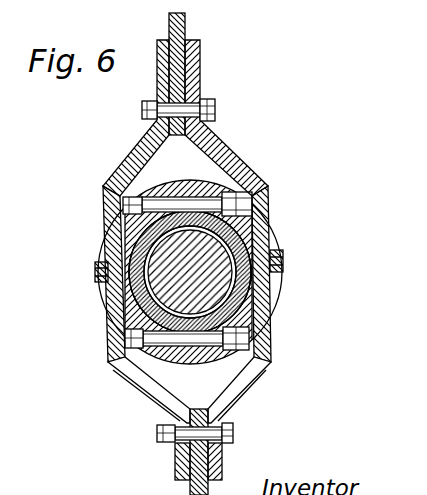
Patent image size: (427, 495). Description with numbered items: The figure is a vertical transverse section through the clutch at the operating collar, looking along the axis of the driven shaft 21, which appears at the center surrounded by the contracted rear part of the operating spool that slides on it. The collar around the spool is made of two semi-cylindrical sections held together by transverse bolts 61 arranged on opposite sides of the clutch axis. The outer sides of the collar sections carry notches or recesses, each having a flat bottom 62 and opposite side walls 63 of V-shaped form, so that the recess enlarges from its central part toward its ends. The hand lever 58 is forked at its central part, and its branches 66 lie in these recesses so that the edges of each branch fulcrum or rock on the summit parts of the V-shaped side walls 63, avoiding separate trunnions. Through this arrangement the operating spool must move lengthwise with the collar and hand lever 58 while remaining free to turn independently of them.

The hand lever 58 is at (187, 254).
The transverse bolts 61 is at (190, 207).
The flat bottom 62 is at (125, 262).
The side walls 63 is at (108, 285).
The branches 66 is at (125, 337).
The driven shaft 21 is at (225, 281).